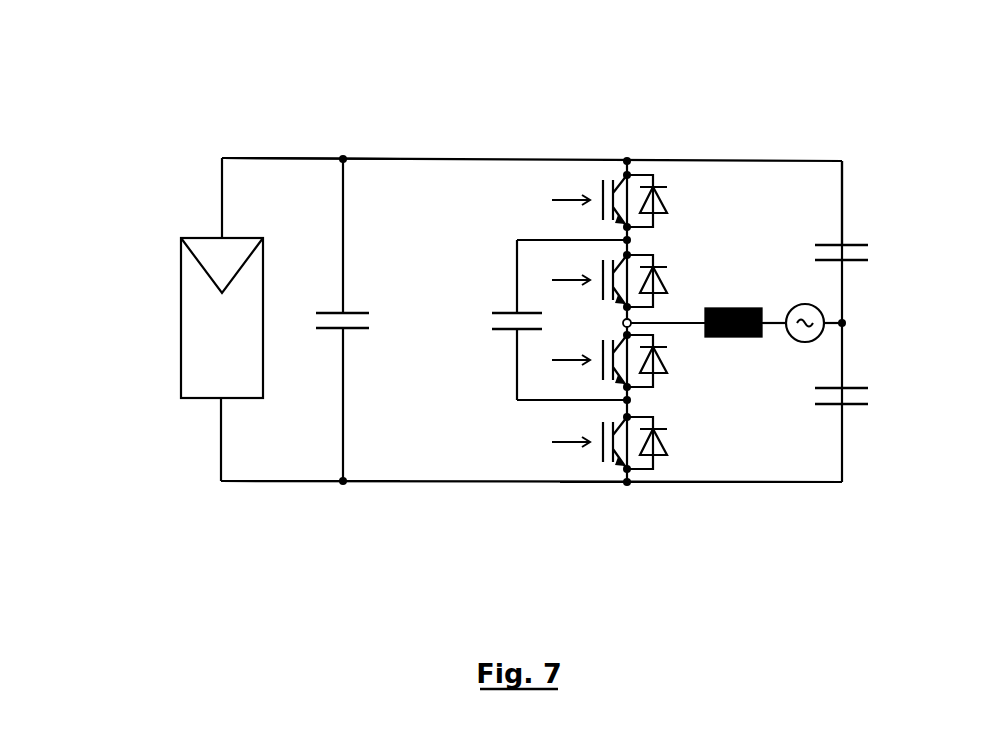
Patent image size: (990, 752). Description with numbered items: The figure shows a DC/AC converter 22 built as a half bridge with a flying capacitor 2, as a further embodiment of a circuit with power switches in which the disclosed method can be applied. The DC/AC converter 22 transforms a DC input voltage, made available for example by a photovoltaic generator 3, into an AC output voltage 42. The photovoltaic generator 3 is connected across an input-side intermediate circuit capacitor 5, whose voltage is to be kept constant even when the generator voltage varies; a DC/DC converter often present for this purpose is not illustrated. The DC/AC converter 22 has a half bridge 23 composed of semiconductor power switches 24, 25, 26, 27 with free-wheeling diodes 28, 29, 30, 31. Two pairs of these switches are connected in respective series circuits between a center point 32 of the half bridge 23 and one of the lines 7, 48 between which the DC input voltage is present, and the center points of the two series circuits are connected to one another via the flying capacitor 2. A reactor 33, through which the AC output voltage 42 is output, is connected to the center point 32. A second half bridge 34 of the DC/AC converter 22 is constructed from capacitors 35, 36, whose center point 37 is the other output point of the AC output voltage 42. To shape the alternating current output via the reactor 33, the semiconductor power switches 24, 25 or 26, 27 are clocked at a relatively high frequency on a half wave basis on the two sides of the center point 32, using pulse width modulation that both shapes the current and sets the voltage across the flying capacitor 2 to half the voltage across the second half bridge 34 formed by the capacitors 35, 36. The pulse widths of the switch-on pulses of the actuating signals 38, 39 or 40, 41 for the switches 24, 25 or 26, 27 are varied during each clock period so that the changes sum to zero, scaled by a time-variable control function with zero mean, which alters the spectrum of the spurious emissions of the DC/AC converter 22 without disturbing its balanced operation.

The flying capacitor 2 is at (506, 308).
The photovoltaic generator 3 is at (200, 232).
The intermediate circuit capacitor 5 is at (329, 308).
The line 7 is at (257, 158).
The DC/AC converter 22 is at (866, 148).
The half bridge 23 is at (631, 505).
The semiconductor power switch 24 is at (588, 186).
The semiconductor power switch 25 is at (583, 272).
The semiconductor power switch 26 is at (558, 362).
The semiconductor power switch 27 is at (588, 460).
The free-wheeling diode 28 is at (672, 197).
The free-wheeling diode 29 is at (672, 278).
The free-wheeling diode 30 is at (677, 362).
The free-wheeling diode 31 is at (677, 451).
The center point 32 is at (623, 323).
The reactor 33 is at (737, 344).
The second half bridge 34 is at (839, 490).
The capacitor 35 is at (880, 243).
The capacitor 36 is at (872, 410).
The center point 37 is at (846, 322).
The actuating signal 38 is at (558, 200).
The actuating signal 39 is at (567, 282).
The actuating signal 40 is at (583, 375).
The actuating signal 41 is at (570, 442).
The AC output voltage 42 is at (805, 303).
The line 48 is at (260, 483).